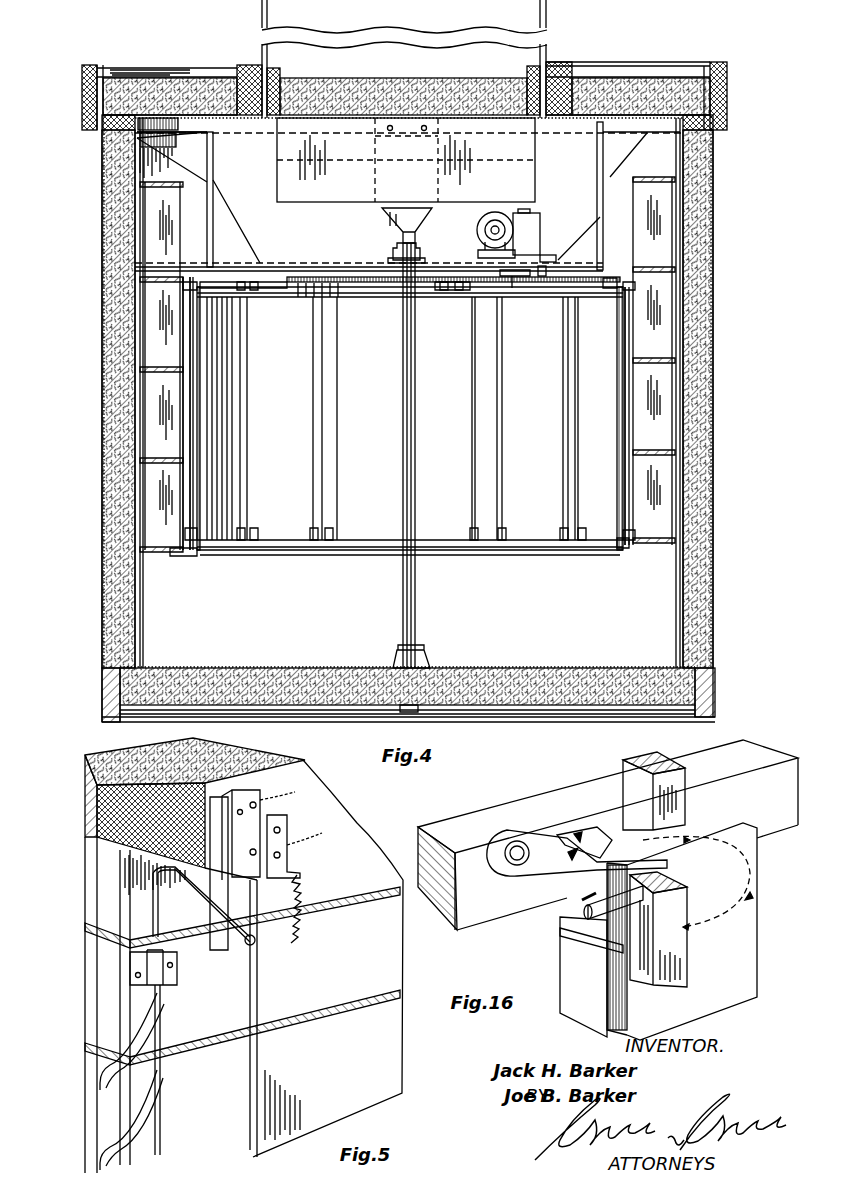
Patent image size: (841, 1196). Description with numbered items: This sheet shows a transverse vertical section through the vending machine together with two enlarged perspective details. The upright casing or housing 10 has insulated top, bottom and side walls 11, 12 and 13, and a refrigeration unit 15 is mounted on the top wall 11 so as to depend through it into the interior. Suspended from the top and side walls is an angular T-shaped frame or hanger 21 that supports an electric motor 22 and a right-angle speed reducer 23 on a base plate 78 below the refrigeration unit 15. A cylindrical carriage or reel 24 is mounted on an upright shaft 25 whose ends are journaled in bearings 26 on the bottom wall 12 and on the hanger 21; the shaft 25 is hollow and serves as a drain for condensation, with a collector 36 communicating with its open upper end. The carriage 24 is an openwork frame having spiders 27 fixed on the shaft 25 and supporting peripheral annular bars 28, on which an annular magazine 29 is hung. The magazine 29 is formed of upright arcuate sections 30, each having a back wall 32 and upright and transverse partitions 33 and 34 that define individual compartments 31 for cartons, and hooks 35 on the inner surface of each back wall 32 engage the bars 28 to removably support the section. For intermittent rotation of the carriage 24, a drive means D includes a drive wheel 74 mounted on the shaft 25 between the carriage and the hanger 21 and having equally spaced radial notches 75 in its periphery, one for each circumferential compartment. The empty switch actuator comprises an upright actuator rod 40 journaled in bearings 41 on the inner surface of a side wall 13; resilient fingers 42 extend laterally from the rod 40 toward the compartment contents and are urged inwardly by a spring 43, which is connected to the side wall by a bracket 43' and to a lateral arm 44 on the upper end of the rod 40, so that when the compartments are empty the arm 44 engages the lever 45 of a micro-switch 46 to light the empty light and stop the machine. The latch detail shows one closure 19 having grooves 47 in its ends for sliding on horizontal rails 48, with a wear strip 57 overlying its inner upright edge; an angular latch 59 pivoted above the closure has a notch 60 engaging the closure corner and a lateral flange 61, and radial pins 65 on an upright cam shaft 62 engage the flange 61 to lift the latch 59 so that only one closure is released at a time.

In FIG. 4, the casing or housing 10 is at (764, 64).
In FIG. 4, the top wall 11 is at (148, 84).
In FIG. 4, the bottom wall 12 is at (246, 670).
In FIG. 4, the side wall 13 is at (105, 195).
In FIG. 5, the side wall 13 is at (85, 765).
In FIG. 4, the refrigeration unit 15 is at (535, 154).
In FIG. 4, the T-shaped frame or hanger 21 is at (213, 155).
In FIG. 4, the electric motor 22 is at (483, 224).
In FIG. 4, the right-angle speed reducer 23 is at (538, 224).
In FIG. 4, the carriage or reel 24 is at (548, 552).
In FIG. 4, the upright shaft 25 is at (417, 384).
In FIG. 4, the bearings 26 is at (394, 252).
In FIG. 4, the spiders 27 is at (361, 282).
In FIG. 4, the peripheral frame members or annular bars 28 is at (610, 296).
In FIG. 4, the annular magazine 29 is at (140, 322).
In FIG. 4, the magazine sections 30 is at (720, 291).
In FIG. 4, the compartments or pockets 31 is at (660, 382).
In FIG. 4, the back wall 32 is at (198, 382).
In FIG. 4, the upright partitions 33 is at (628, 382).
In FIG. 4, the transverse partitions 34 is at (176, 554).
In FIG. 4, the hooks 35 is at (190, 536).
In FIG. 4, the collector 36 is at (382, 214).
In FIG. 4, the drive wheel or circular plate 74 is at (466, 294).
In FIG. 4, the radial notches or slots 75 is at (284, 292).
In FIG. 4, the base plate 78 is at (547, 255).
In FIG. 4, the intermittent drive connection or means D is at (536, 296).
In FIG. 5, the actuator rod 40 is at (164, 1050).
In FIG. 5, the bearings 41 is at (164, 980).
In FIG. 5, the resilient fingers 42 is at (103, 1085).
In FIG. 5, the spring 43 is at (295, 909).
In FIG. 5, the bracket 43' is at (303, 846).
In FIG. 5, the lateral arm 44 is at (180, 936).
In FIG. 5, the switch lever 45 is at (224, 948).
In FIG. 5, the micro-switch 46 is at (262, 786).
In FIG. 16, the closures or access doors 19 is at (756, 948).
In FIG. 16, the longitudinal channels or grooves 47 is at (586, 896).
In FIG. 16, the horizontal rails or tracks 48 is at (746, 746).
In FIG. 16, the wear strip 57 is at (560, 958).
In FIG. 16, the keeper element or latch 59 is at (524, 878).
In FIG. 16, the notch 60 is at (576, 862).
In FIG. 16, the lateral flange 61 is at (618, 818).
In FIG. 16, the cam shaft 62 is at (690, 954).
In FIG. 16, the lugs or pins 65 is at (586, 915).